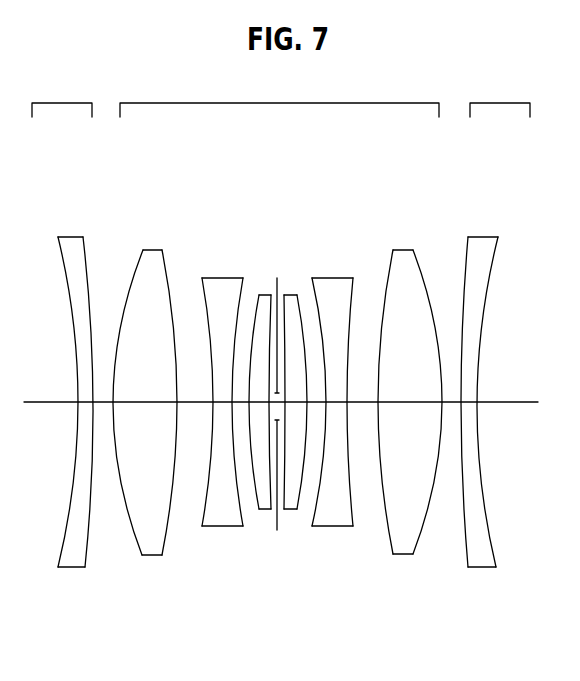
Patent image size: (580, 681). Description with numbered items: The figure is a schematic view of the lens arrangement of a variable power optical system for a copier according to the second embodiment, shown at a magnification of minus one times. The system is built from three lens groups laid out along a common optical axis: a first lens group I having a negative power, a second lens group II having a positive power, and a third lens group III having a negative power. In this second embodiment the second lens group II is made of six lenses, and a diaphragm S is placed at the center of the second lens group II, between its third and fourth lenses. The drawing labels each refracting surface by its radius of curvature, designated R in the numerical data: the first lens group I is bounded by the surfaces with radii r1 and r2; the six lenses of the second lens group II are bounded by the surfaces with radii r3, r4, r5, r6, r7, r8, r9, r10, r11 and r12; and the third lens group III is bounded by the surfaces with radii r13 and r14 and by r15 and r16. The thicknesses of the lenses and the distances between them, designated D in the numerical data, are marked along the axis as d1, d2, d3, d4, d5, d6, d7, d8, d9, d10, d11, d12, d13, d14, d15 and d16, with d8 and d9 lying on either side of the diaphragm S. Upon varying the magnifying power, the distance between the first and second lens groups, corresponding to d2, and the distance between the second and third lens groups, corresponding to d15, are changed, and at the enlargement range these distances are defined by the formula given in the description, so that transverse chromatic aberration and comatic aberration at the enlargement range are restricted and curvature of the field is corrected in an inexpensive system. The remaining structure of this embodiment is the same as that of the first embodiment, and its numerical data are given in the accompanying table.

The first lens group I is at (62, 94).
The second lens group II is at (279, 94).
The third lens group III is at (500, 94).
The diaphragm S is at (277, 278).
The radius of curvature r1 is at (58, 236).
The radius of curvature r2 is at (83, 236).
The radius of curvature r3 is at (143, 249).
The radius of curvature r4 is at (162, 249).
The radius of curvature r5 is at (202, 277).
The radius of curvature r6 is at (243, 277).
The radius of curvature r7 is at (259, 294).
The radius of curvature r8 is at (271, 294).
The radius of curvature r9 is at (284, 294).
The radius of curvature r10 is at (297, 294).
The radius of curvature r11 is at (312, 278).
The radius of curvature r12 is at (353, 278).
The radius of curvature r13 is at (393, 250).
The radius of curvature r14 is at (413, 250).
The radius of curvature r15 is at (468, 237).
The radius of curvature r16 is at (498, 237).
The lens thickness or distance d1 is at (85, 402).
The lens thickness or distance d2 is at (103, 402).
The lens thickness or distance d3 is at (140, 402).
The lens thickness or distance d4 is at (195, 402).
The lens thickness or distance d5 is at (222, 402).
The lens thickness or distance d6 is at (241, 402).
The lens thickness or distance d7 is at (260, 402).
The lens thickness or distance d8 is at (273, 402).
The lens thickness or distance d9 is at (281, 402).
The lens thickness or distance d10 is at (296, 402).
The lens thickness or distance d11 is at (316, 402).
The lens thickness or distance d12 is at (336, 402).
The lens thickness or distance d13 is at (362, 402).
The lens thickness or distance d14 is at (410, 402).
The lens thickness or distance d15 is at (451, 402).
The lens thickness or distance d16 is at (469, 402).